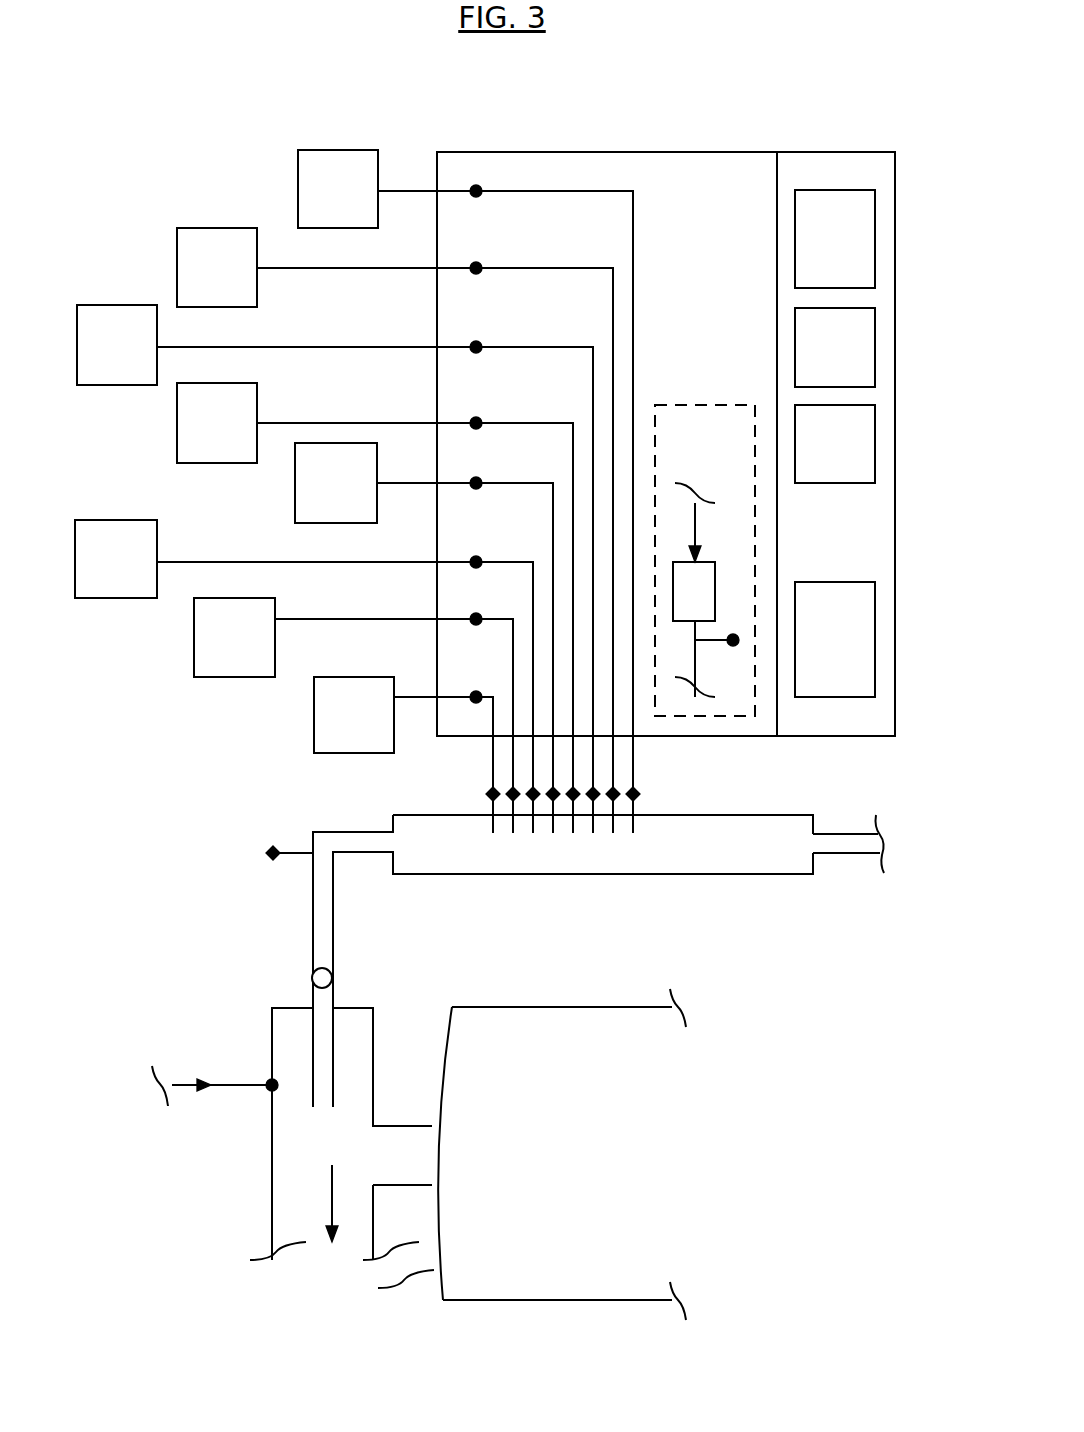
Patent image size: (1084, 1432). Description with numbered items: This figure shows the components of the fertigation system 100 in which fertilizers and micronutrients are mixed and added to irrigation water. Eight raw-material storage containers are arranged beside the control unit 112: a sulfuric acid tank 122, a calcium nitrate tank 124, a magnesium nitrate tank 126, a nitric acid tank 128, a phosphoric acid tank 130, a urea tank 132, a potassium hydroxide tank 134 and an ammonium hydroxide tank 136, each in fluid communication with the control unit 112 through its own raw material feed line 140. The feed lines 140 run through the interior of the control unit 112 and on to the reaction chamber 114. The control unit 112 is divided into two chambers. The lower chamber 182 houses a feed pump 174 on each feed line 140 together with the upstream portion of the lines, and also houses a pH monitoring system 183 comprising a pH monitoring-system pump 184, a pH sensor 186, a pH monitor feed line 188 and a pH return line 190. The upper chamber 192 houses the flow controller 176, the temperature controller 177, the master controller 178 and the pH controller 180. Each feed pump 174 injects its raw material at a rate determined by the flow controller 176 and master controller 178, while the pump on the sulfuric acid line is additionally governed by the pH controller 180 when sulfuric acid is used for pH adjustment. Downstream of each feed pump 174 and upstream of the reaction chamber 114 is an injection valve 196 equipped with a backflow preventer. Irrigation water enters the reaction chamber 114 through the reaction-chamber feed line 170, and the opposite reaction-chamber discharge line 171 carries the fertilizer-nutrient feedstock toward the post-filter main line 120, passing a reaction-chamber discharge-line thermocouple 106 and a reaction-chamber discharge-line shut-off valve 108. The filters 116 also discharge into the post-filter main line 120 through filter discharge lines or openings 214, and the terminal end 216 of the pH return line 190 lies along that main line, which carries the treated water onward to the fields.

The system 100 is at (150, 160).
The reaction-chamber discharge-line thermocouple 106 is at (253, 852).
The reaction-chamber discharge-line shut-off valve 108 is at (312, 970).
The control unit 112 is at (666, 444).
The reaction chamber 114 is at (603, 844).
The filters 116 is at (562, 1154).
The post-filter main line 120 is at (270, 1167).
The sulfuric acid tank 122 is at (338, 189).
The calcium nitrate tank 124 is at (217, 267).
The magnesium nitrate tank 126 is at (117, 345).
The nitric acid tank 128 is at (217, 423).
The phosphoric acid tank 130 is at (336, 483).
The urea tank 132 is at (116, 559).
The potassium hydroxide tank 134 is at (234, 637).
The ammonium hydroxide tank 136 is at (354, 715).
The raw material feed lines 140 is at (397, 190).
The reaction-chamber feed line 170 is at (855, 832).
The reaction-chamber discharge line 171 is at (350, 832).
The feed pump 174 is at (476, 423).
The flow controller 176 is at (835, 239).
The temperature controller 177 is at (835, 347).
The master controller 178 is at (835, 639).
The pH controller 180 is at (835, 444).
The lower chamber 182 is at (697, 152).
The pH monitoring system 183 is at (705, 560).
The pH monitoring-system pump 184 is at (715, 582).
The pH sensor 186 is at (733, 640).
The pH monitor feed line 188 is at (697, 542).
The pH return line 190 is at (697, 660).
The upper chamber 192 is at (853, 152).
The injection valve 196 is at (492, 794).
The filter discharge lines or openings 214 is at (392, 1123).
The terminal end of the pH return line 216 is at (228, 1083).